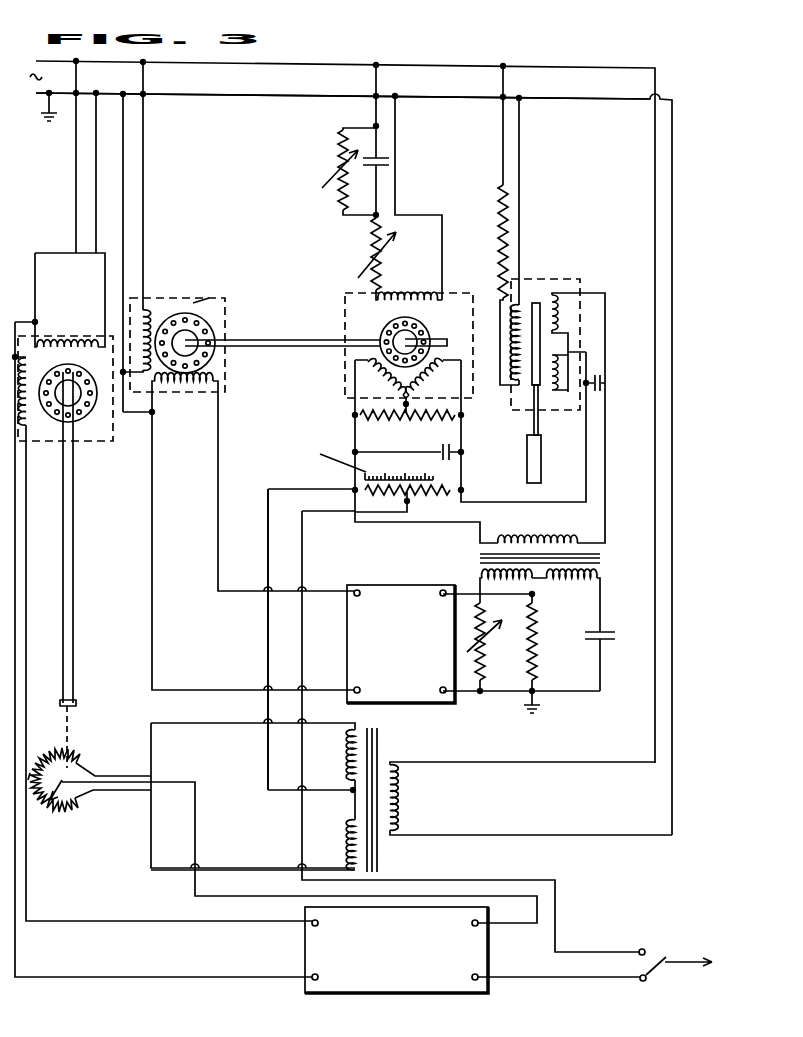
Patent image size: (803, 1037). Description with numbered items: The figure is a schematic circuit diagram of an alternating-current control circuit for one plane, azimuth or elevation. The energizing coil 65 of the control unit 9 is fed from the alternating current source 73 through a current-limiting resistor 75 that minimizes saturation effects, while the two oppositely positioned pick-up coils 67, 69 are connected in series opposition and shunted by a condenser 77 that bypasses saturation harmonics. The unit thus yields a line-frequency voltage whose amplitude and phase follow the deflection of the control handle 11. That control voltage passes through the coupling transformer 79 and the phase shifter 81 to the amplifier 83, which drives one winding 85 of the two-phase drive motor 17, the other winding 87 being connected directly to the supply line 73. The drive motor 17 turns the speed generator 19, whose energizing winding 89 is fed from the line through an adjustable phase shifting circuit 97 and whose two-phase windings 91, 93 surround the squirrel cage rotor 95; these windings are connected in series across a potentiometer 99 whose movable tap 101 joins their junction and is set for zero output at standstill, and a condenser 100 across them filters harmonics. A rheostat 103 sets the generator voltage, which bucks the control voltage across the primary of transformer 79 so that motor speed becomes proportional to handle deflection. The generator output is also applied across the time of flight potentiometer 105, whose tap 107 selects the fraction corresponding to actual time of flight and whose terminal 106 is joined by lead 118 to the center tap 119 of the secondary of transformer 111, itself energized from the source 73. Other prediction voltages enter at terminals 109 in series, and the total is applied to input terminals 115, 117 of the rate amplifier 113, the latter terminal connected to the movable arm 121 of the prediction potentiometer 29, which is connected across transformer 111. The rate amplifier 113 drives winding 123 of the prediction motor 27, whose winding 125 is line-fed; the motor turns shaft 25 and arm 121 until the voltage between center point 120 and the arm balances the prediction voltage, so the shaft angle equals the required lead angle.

The control unit 9 is at (568, 278).
The control handle 11 is at (531, 452).
The drive motor 17 is at (182, 294).
The speed generator 19 is at (343, 372).
The shaft 25 is at (78, 558).
The prediction motor 27 is at (114, 419).
The prediction potentiometer 29 is at (82, 766).
The energizing coil 65 is at (521, 304).
The pick-up coil 67 is at (560, 315).
The pick-up coil 69 is at (553, 400).
The source of alternating current 73 is at (232, 100).
The current-limiting resistor 75 is at (500, 195).
The condenser 77 is at (603, 380).
The coupling transformer 79 is at (555, 583).
The phase shifter 81 is at (574, 647).
The amplifier 83 is at (405, 704).
The winding 85 is at (189, 386).
The winding 87 is at (145, 306).
The energizing winding 89 is at (397, 299).
The two-phase winding 91 is at (394, 389).
The two-phase winding 93 is at (428, 384).
The rotor 95 is at (427, 337).
The adjustable phase shifting circuit 97 is at (330, 172).
The potentiometer 99 is at (407, 420).
The condenser 100 is at (451, 452).
The movable tap 101 is at (404, 406).
The rheostat 103 is at (372, 242).
The potentiometer 105 is at (366, 491).
The terminal 106 is at (353, 489).
The tap 107 is at (410, 503).
The terminals 109 is at (653, 955).
The transformer 111 is at (380, 758).
The rate amplifier 113 is at (362, 985).
The input terminal 115 is at (480, 984).
The input terminal 117 is at (478, 927).
The lead 118 is at (268, 642).
The center tap 119 is at (352, 790).
The center point 120 is at (30, 773).
The movable arm 121 is at (66, 792).
The winding 123 is at (31, 430).
The winding 125 is at (53, 344).